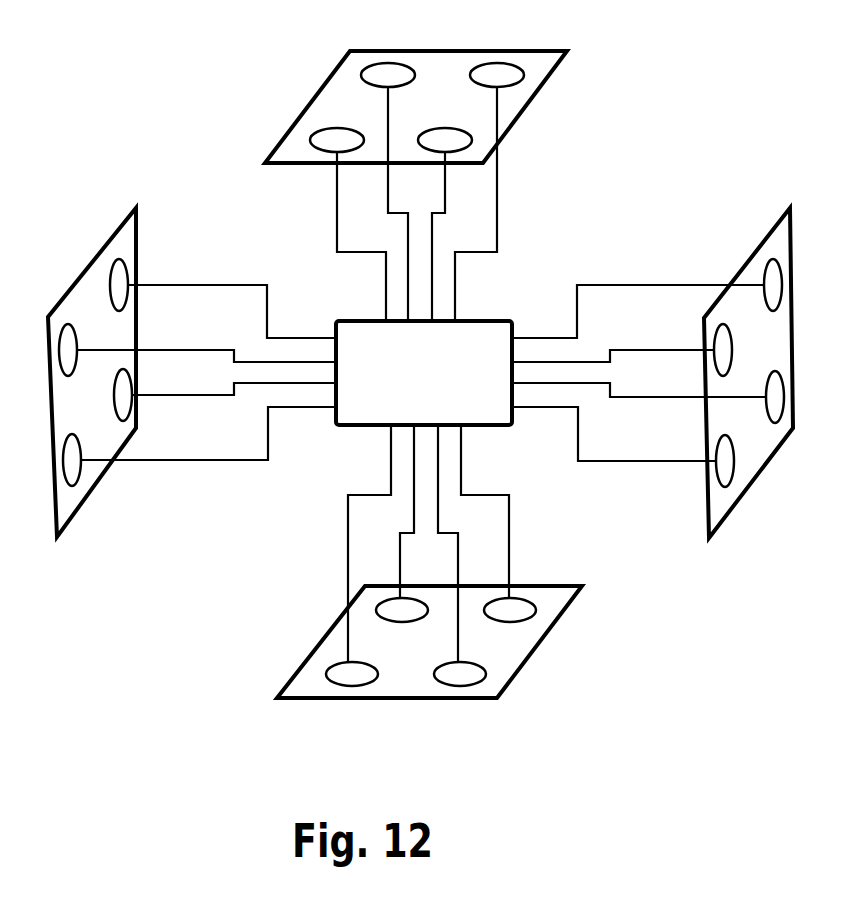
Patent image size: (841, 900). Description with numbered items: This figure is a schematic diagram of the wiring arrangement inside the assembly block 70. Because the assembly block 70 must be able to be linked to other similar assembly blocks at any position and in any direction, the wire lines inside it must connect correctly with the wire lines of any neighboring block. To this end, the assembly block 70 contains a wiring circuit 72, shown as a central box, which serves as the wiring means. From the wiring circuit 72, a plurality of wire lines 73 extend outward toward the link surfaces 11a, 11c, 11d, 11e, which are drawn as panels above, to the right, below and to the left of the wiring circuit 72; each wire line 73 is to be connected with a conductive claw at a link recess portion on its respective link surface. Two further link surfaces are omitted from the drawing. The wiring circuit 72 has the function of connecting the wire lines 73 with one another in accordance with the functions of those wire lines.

The assembly block 70 is at (665, 106).
The wiring circuit 72 is at (484, 318).
The wire lines 73 is at (337, 187).
The link surface 11a is at (338, 97).
The link surface 11c is at (763, 455).
The link surface 11d is at (388, 698).
The link surface 11e is at (50, 468).